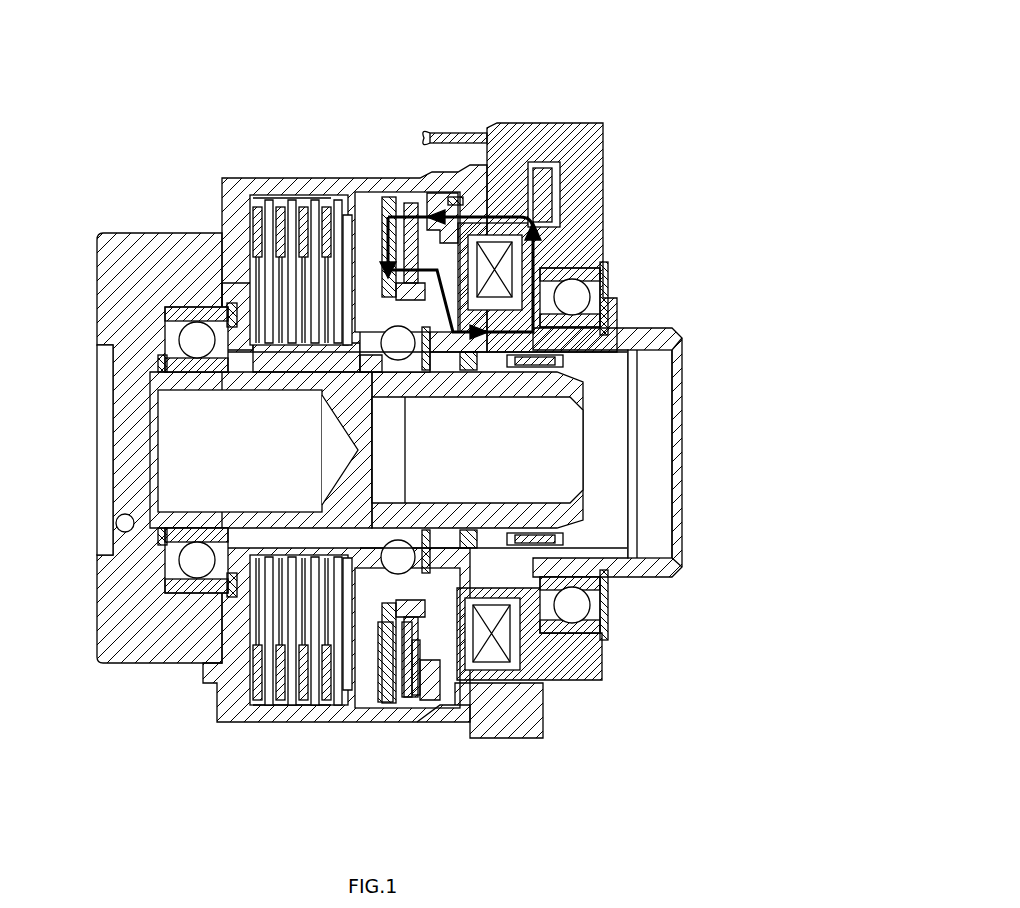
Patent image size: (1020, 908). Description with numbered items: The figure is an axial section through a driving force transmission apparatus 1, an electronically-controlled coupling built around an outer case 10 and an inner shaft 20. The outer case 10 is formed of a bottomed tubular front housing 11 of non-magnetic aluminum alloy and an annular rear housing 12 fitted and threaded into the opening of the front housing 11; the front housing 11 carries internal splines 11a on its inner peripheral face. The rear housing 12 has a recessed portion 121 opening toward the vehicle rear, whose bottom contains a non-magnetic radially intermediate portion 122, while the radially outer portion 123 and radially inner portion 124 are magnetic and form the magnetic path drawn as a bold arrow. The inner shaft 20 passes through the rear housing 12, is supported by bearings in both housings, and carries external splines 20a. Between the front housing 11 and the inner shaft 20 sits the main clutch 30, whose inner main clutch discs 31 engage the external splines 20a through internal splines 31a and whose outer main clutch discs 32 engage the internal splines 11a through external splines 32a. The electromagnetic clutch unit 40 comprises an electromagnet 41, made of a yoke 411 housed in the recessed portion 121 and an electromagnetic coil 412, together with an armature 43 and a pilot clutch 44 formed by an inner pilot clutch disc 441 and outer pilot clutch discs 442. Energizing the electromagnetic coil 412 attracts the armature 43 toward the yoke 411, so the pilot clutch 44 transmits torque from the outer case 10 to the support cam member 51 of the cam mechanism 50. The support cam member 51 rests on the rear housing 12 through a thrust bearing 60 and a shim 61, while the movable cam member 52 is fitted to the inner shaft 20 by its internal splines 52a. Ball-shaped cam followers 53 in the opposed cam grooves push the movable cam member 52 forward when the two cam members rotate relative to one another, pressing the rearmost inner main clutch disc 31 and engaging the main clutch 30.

The driving force transmission apparatus 1 is at (612, 113).
The outer case 10 is at (150, 230).
The front housing 11 is at (188, 233).
The internal splines 11a is at (352, 230).
The rear housing 12 is at (510, 165).
The recessed portion 121 is at (505, 258).
The radially intermediate portion 122 is at (496, 272).
The radially outer portion 123 is at (540, 190).
The radially inner portion 124 is at (605, 275).
The inner shaft 20 is at (202, 383).
The external splines 20a is at (252, 345).
The main clutch 30 is at (276, 391).
The inner main clutch discs 31 is at (258, 290).
The internal splines 31a is at (290, 350).
The outer main clutch discs 32 is at (280, 260).
The external splines 32a is at (325, 265).
The electromagnetic clutch unit 40 is at (570, 692).
The electromagnet 41 is at (684, 652).
The yoke 411 is at (560, 684).
The electromagnetic coil 412 is at (495, 633).
The armature 43 is at (385, 703).
The pilot clutch 44 is at (427, 737).
The inner pilot clutch disc 441 is at (406, 700).
The outer pilot clutch discs 442 is at (418, 700).
The cam mechanism 50 is at (402, 364).
The support cam member 51 is at (420, 297).
The movable cam member 52 is at (368, 225).
The armature flange 52a is at (405, 368).
The cam followers 53 is at (396, 326).
The thrust bearing 60 is at (590, 340).
The shim 61 is at (430, 385).